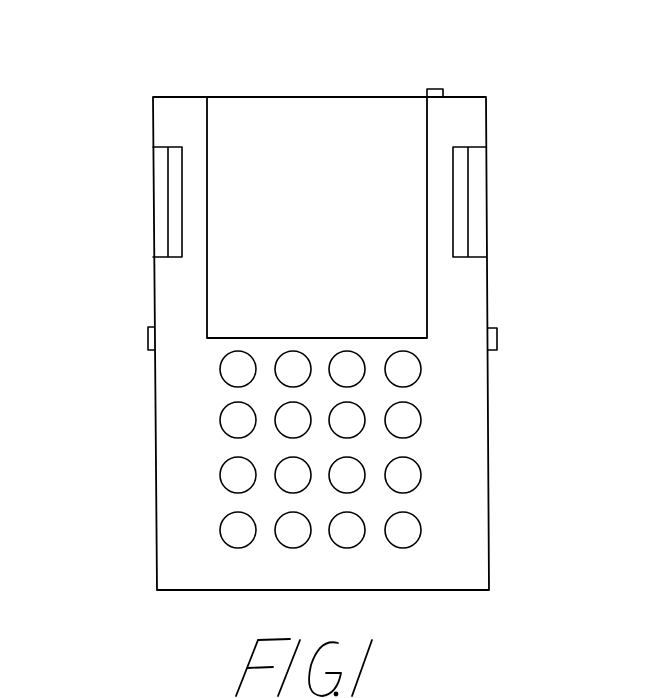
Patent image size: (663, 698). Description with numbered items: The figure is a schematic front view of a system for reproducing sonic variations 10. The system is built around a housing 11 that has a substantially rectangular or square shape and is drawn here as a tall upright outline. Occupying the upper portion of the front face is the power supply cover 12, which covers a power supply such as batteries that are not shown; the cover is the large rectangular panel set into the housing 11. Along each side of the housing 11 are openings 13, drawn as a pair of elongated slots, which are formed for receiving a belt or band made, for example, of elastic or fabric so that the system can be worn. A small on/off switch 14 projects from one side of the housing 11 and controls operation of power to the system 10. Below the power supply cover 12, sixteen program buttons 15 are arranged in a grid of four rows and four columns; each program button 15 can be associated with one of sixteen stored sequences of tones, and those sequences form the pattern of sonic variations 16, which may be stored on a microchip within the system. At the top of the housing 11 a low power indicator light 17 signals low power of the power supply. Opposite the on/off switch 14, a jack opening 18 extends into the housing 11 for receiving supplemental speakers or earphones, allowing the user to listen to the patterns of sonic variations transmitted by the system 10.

The system for reproducing sonic variations 10 is at (122, 39).
The housing 11 is at (165, 113).
The power supply cover 12 is at (217, 138).
The openings 13 is at (140, 198).
The on/off switch 14 is at (131, 343).
The program buttons 15 is at (204, 415).
The pattern of sonic variations 16 is at (247, 112).
The low power indicator light 17 is at (441, 82).
The jack opening 18 is at (507, 343).